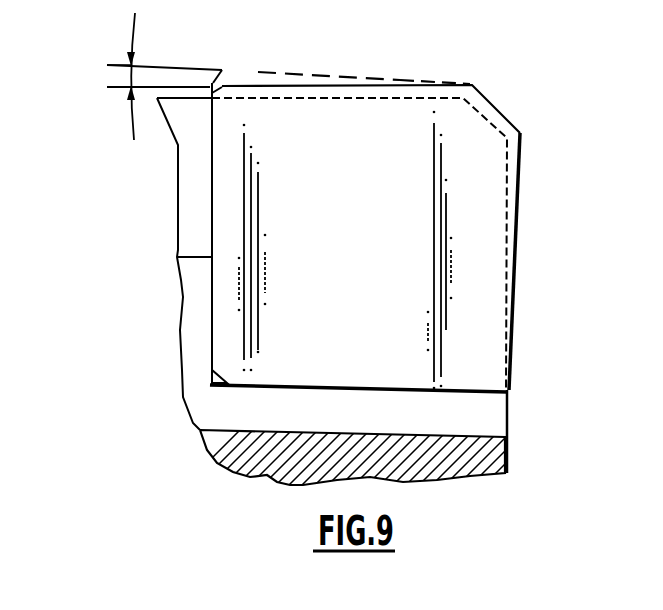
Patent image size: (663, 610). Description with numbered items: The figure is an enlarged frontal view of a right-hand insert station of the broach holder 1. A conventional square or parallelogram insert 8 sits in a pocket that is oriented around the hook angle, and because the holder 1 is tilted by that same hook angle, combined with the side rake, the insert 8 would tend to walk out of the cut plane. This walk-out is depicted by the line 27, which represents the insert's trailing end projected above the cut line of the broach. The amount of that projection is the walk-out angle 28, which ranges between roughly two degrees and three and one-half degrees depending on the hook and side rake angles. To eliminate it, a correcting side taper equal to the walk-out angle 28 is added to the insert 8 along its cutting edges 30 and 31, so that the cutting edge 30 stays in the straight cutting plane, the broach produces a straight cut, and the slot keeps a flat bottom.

The holder 1 is at (507, 453).
The insert 8 is at (492, 98).
The trailing end of insert 27 is at (316, 75).
The walk-out angle 28 is at (122, 79).
The cutting edge 30 is at (400, 71).
The cutting edge 31 is at (518, 205).